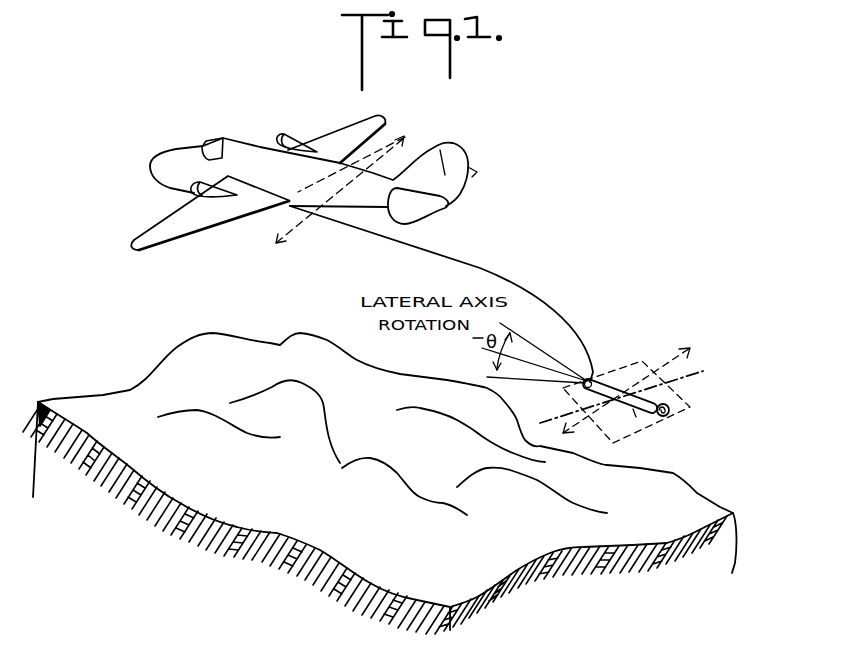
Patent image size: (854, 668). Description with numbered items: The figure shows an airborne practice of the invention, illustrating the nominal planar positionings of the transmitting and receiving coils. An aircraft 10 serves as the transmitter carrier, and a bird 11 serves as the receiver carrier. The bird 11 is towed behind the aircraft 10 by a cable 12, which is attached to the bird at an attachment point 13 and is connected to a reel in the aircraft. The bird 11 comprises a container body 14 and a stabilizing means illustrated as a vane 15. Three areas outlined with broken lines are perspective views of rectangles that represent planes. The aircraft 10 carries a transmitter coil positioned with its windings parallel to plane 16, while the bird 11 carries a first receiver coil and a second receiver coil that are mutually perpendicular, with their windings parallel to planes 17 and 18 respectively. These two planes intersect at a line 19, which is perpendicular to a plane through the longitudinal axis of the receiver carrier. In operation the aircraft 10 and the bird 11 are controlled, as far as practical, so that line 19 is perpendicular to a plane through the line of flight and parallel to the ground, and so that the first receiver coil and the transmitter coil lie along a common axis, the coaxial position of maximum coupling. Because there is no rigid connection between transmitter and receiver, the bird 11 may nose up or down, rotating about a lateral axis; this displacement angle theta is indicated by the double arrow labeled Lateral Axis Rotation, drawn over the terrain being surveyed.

The aircraft 10 is at (170, 155).
The bird 11 is at (633, 407).
The cable 12 is at (483, 272).
The attachment point 13 is at (608, 383).
The container body 14 is at (632, 408).
The vane 15 is at (675, 414).
The plane 16 is at (405, 136).
The plane 17 is at (690, 350).
The plane 18 is at (673, 406).
The line 19 is at (687, 378).